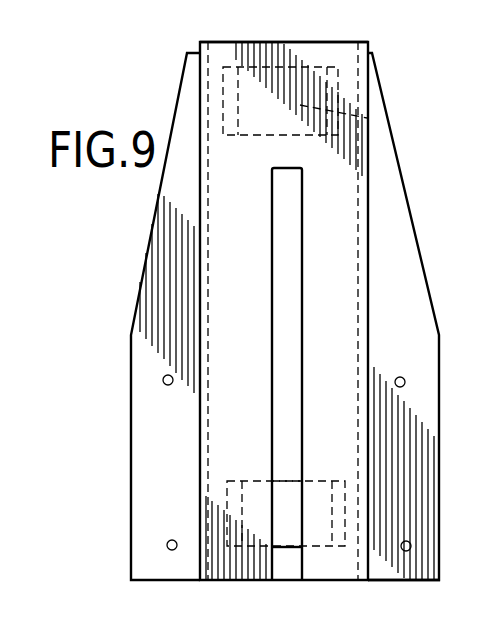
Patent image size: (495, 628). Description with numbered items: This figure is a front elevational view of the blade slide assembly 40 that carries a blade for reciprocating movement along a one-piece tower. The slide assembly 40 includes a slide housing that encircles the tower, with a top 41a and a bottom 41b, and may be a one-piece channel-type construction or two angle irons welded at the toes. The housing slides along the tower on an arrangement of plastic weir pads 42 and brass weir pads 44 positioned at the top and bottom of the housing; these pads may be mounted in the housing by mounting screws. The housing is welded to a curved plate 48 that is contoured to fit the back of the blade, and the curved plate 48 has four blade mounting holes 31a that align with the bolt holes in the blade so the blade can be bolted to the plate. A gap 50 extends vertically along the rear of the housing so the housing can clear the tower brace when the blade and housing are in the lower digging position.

The blade slide assembly 40 is at (432, 272).
The top of slide housing 41a is at (374, 39).
The bottom of slide housing 41b is at (440, 565).
The plastic weir pads 42 is at (367, 118).
The brass weir pads 44 is at (230, 104).
The curved plate 48 is at (146, 252).
The blade mounting holes 31a is at (163, 380).
The gap 50 is at (290, 565).